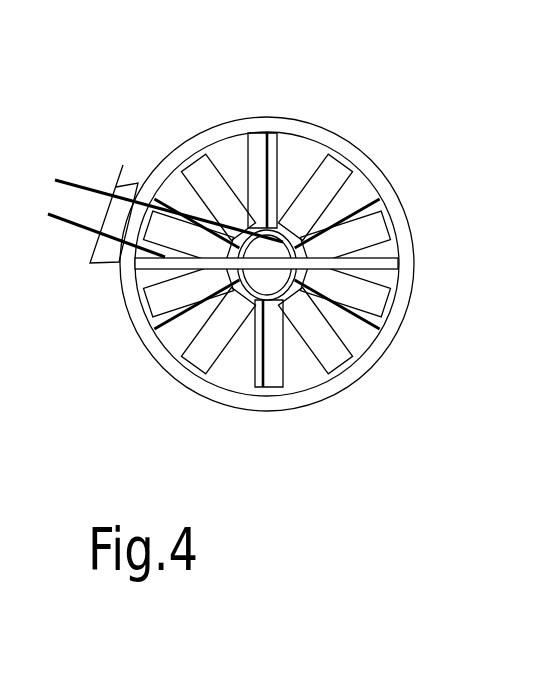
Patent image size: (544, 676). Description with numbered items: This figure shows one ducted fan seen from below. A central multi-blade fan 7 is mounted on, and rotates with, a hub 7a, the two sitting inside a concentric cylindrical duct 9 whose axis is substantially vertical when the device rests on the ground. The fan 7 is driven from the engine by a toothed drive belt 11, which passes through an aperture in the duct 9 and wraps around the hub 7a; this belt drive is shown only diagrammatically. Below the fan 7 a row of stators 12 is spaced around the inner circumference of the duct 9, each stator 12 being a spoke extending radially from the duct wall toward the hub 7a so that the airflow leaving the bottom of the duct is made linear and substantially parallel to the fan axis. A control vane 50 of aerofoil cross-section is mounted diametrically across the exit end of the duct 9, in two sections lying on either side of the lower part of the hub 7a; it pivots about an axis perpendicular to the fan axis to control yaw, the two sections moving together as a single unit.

The multi-blade fan 7 is at (255, 153).
The hub 7a is at (272, 250).
The duct 9 is at (164, 162).
The drive belt 11 is at (66, 226).
The stators 12 is at (272, 376).
The control vane 50 is at (392, 265).